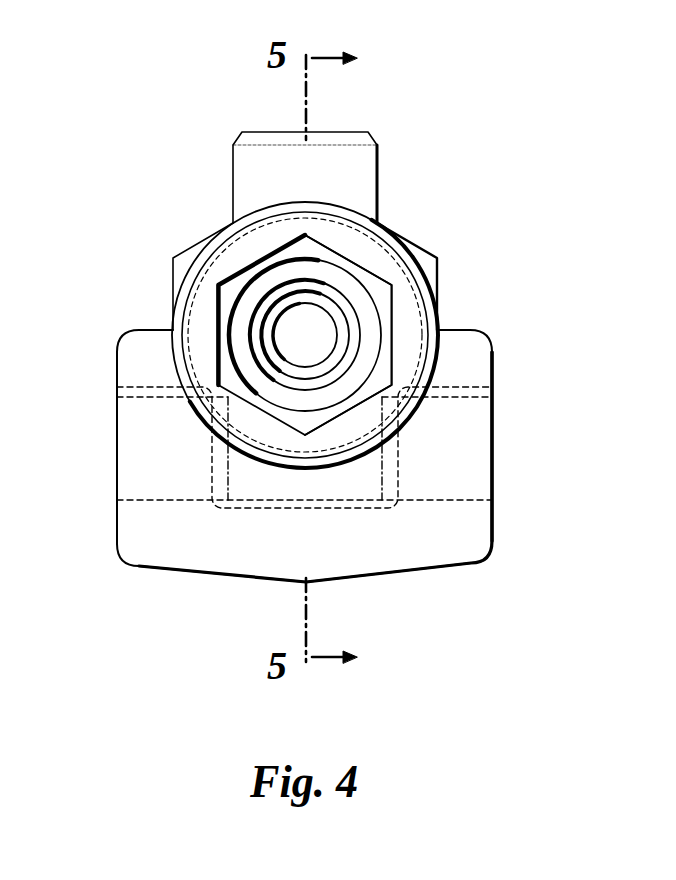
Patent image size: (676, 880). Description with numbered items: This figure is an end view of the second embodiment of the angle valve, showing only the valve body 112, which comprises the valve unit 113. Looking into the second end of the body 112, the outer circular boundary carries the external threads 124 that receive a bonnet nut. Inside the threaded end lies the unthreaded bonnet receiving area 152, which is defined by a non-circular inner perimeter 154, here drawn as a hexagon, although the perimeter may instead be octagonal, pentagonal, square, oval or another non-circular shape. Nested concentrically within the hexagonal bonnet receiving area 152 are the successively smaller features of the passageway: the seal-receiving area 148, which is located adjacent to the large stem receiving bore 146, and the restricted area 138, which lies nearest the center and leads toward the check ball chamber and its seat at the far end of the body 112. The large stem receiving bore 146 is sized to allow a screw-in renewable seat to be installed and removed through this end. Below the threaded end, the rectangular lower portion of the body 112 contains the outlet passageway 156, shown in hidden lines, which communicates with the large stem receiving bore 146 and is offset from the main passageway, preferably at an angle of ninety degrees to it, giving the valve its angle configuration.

The body 112 is at (458, 329).
The valve unit 113 is at (458, 329).
The external threads 124 is at (372, 238).
The restricted area 138 is at (283, 327).
The large stem receiving bore 146 is at (271, 310).
The seal-receiving area 148 is at (269, 275).
The unthreaded bonnet receiving area 152 is at (300, 252).
The non-circular inner perimeter 154 is at (300, 252).
The outlet passageway 156 is at (467, 462).